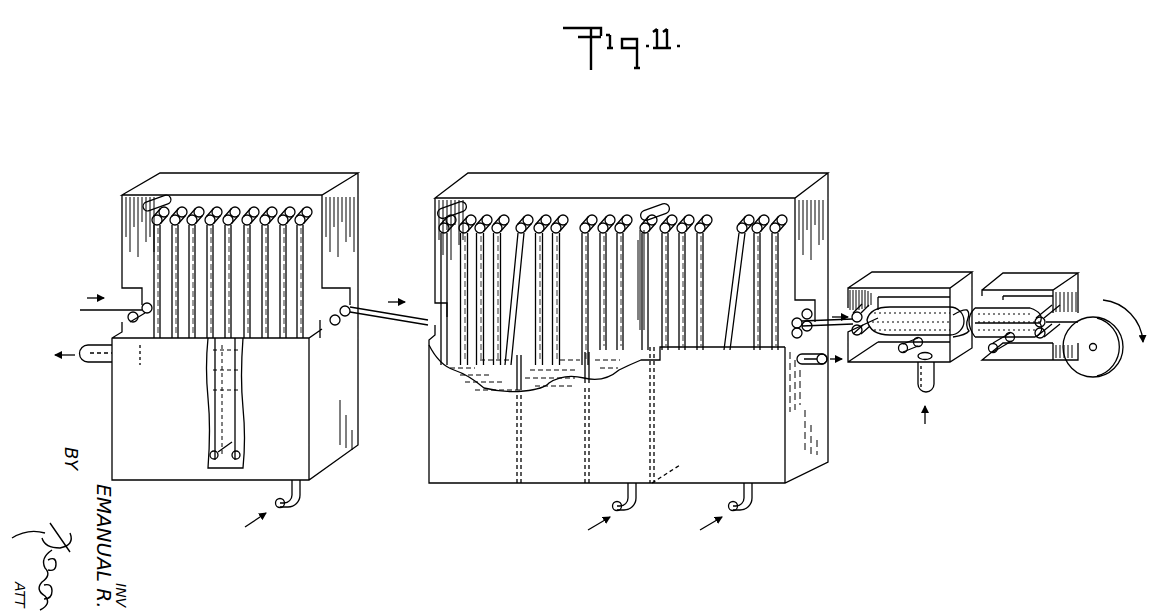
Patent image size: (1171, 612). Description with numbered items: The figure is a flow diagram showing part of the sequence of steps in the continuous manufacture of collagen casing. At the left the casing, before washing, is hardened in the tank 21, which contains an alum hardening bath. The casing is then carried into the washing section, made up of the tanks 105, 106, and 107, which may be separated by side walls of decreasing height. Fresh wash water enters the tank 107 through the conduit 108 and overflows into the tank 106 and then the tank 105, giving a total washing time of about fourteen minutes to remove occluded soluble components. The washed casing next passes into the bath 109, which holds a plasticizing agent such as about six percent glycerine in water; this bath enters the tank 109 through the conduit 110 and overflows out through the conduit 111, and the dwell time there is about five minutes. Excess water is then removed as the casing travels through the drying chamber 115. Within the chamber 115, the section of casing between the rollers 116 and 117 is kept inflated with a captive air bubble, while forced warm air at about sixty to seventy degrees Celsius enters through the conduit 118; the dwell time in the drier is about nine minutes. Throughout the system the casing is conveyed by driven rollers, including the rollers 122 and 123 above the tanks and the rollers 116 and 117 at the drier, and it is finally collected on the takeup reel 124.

The hardening tank 21 is at (347, 462).
The washing tank 105 is at (448, 488).
The washing tank 106 is at (557, 470).
The washing tank 107 is at (614, 470).
The conduit 108 is at (632, 500).
The plasticizing bath tank 109 is at (805, 473).
The conduit 110 is at (745, 500).
The conduit 111 is at (815, 367).
The drying chamber 115 is at (1058, 268).
The roller 116 is at (868, 308).
The roller 117 is at (1043, 338).
The conduit 118 is at (923, 377).
The driven roller 122 is at (440, 215).
The driven roller 123 is at (650, 214).
The takeup reel 124 is at (1095, 360).